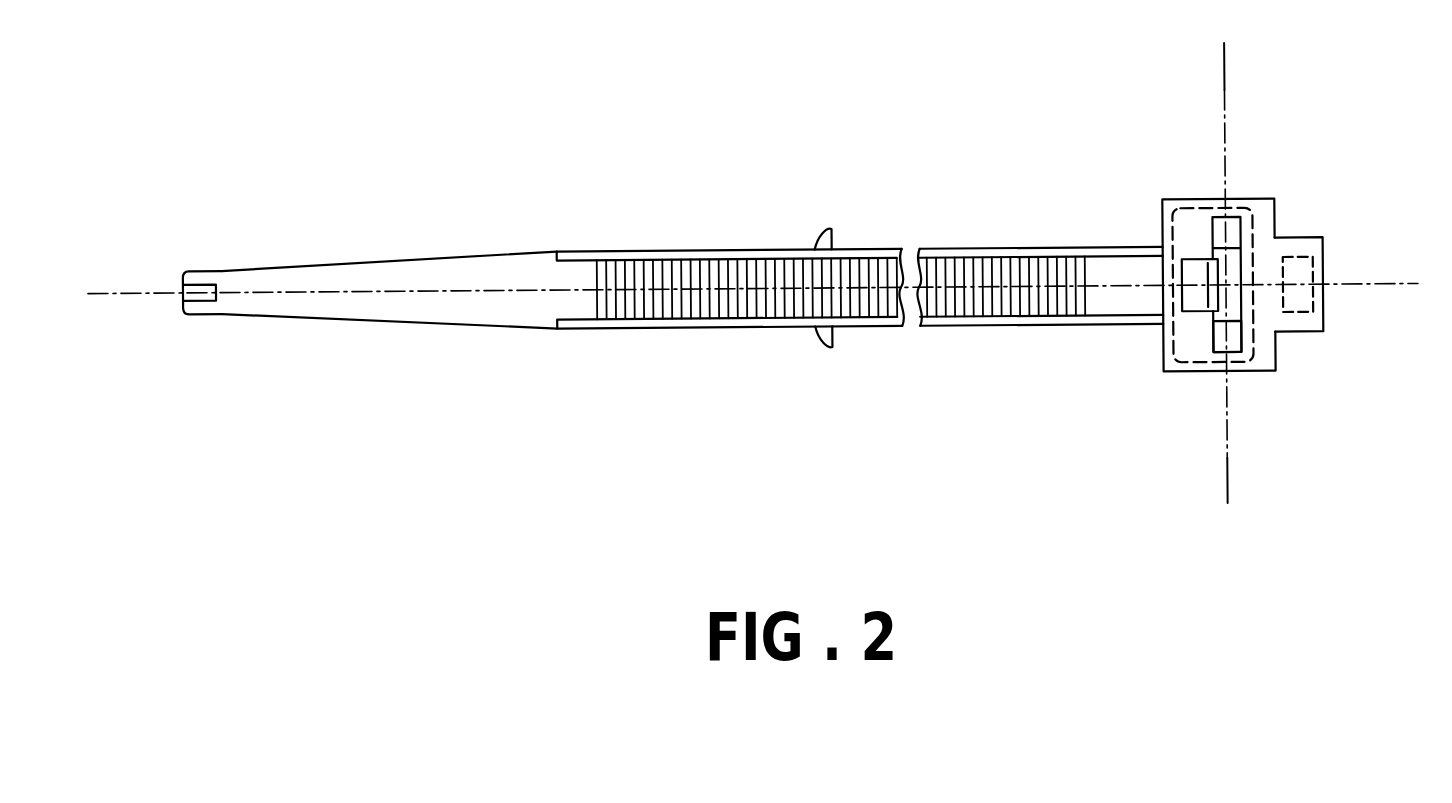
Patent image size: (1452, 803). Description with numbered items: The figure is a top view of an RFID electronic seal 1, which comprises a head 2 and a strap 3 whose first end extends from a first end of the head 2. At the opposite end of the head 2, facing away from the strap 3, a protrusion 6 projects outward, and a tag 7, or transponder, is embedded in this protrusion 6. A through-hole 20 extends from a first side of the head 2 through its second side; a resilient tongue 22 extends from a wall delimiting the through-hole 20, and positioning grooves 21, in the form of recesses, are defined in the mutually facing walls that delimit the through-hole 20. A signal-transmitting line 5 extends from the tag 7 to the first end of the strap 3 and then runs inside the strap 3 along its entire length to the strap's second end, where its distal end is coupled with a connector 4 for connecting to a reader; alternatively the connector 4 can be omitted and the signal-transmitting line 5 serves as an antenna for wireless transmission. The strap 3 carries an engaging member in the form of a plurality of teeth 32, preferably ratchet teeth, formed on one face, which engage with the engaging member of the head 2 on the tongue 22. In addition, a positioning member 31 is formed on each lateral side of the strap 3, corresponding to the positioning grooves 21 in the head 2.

The RFID electronic seal 1 is at (1039, 214).
The head 2 is at (1166, 298).
The strap 3 is at (891, 276).
The connector 4 is at (761, 303).
The signal-transmitting line 5 is at (389, 243).
The protrusion 6 is at (1299, 226).
The tag 7 is at (1301, 372).
The through-hole 20 is at (1243, 332).
The positioning groove 21 is at (1206, 384).
The resilient tongue 22 is at (1191, 217).
The positioning member 31 is at (832, 246).
The teeth 32 is at (746, 230).